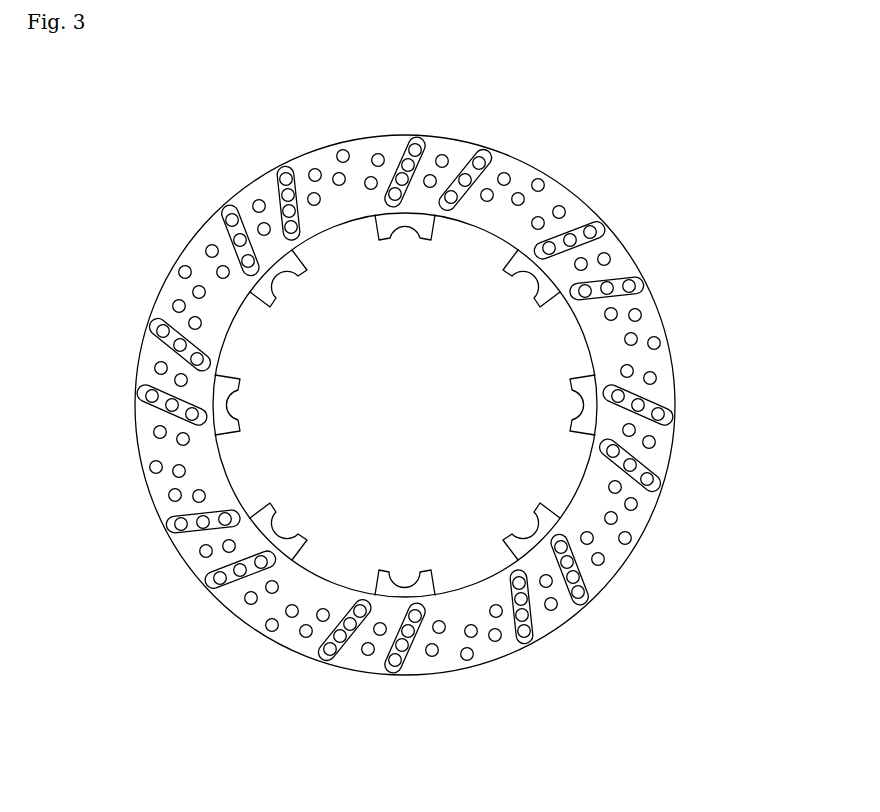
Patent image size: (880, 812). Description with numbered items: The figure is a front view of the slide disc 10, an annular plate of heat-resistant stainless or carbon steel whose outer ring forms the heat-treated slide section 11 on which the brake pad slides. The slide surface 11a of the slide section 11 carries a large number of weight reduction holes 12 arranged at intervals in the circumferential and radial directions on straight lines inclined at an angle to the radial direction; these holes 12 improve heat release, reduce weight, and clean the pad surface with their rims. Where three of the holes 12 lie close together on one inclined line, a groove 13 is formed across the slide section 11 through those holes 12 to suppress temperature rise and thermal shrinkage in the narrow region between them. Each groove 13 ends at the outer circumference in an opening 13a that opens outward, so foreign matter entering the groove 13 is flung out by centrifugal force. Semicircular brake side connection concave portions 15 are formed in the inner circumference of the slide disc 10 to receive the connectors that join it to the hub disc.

The slide disc 10 is at (603, 183).
The slide section 11 is at (528, 175).
The slide surface 11a is at (312, 165).
The weight reduction holes 12 is at (187, 268).
The grooves 13 is at (470, 172).
The openings 13a is at (135, 390).
The brake side connection concave portions 15 is at (403, 223).